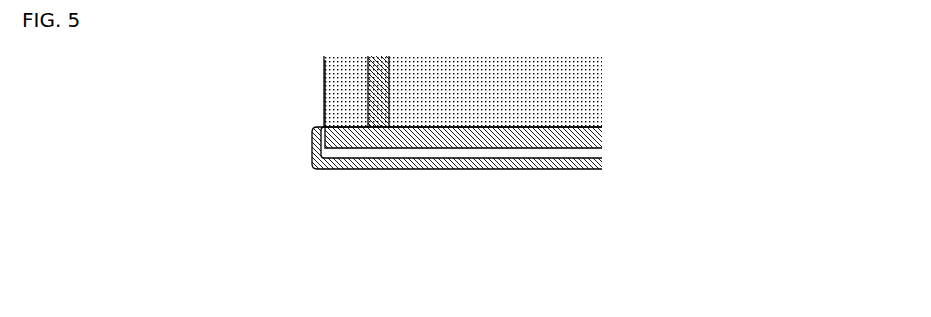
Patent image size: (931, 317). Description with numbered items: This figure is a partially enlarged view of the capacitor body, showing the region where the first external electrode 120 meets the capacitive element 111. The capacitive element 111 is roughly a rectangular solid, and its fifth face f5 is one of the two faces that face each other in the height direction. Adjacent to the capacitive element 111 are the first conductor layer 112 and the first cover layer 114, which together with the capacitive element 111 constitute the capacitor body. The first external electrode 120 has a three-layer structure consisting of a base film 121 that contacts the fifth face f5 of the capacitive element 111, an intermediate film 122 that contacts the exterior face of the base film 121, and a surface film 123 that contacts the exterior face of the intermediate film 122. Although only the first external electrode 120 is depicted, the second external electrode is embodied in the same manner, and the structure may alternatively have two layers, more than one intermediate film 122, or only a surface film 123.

The capacitive element 111 is at (580, 79).
The first conductor layer 112 is at (380, 72).
The first cover layer 114 is at (345, 105).
The fifth face f5 is at (585, 126).
The first external electrode 120 is at (457, 206).
The base film 121 is at (414, 138).
The intermediate film 122 is at (462, 150).
The surface film 123 is at (390, 235).